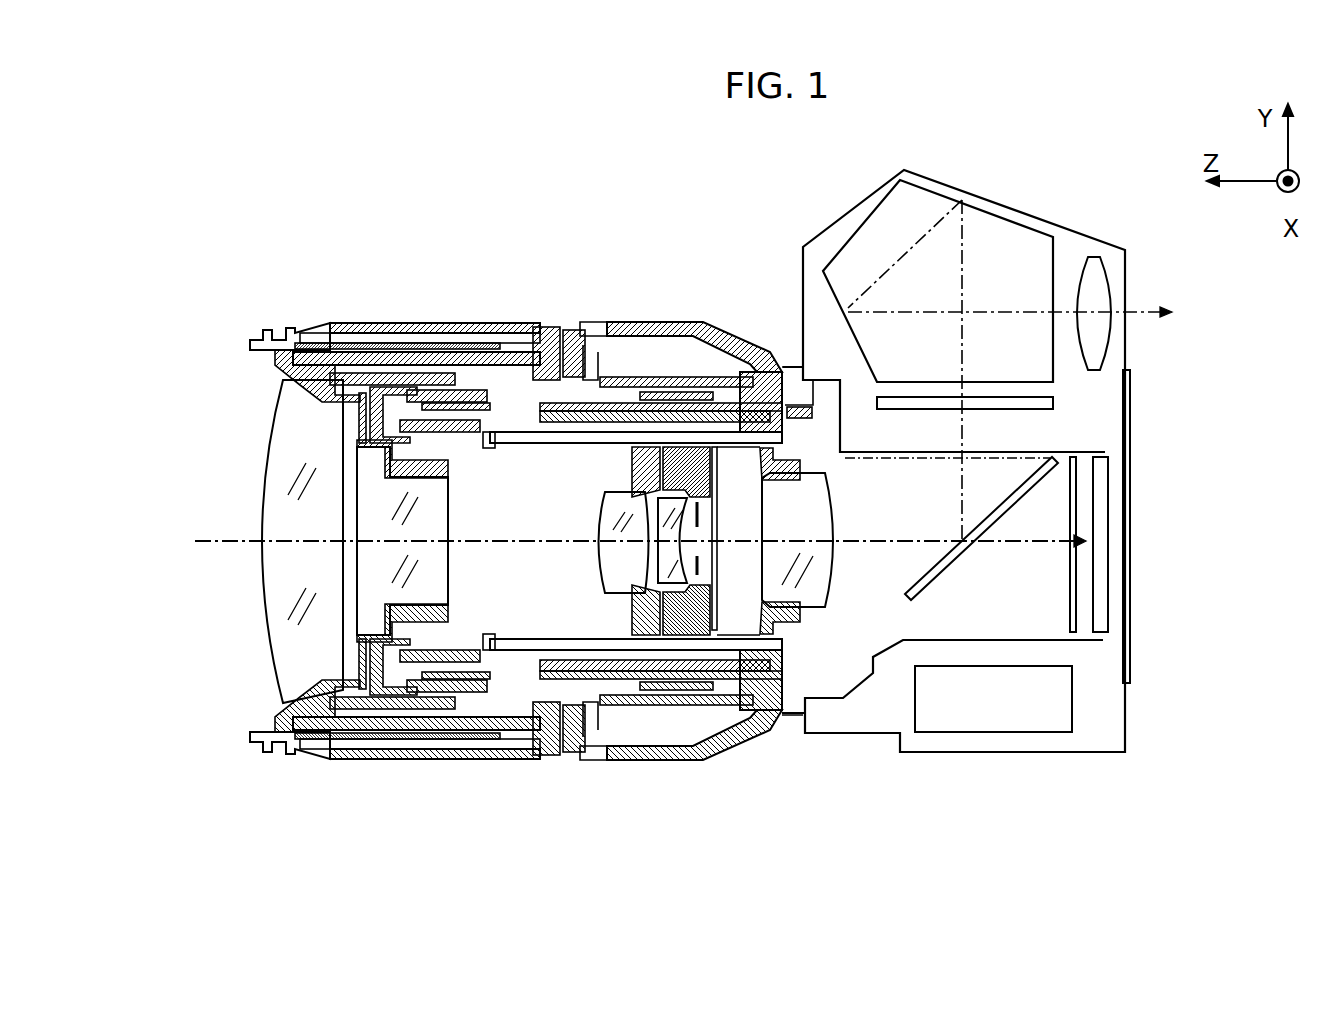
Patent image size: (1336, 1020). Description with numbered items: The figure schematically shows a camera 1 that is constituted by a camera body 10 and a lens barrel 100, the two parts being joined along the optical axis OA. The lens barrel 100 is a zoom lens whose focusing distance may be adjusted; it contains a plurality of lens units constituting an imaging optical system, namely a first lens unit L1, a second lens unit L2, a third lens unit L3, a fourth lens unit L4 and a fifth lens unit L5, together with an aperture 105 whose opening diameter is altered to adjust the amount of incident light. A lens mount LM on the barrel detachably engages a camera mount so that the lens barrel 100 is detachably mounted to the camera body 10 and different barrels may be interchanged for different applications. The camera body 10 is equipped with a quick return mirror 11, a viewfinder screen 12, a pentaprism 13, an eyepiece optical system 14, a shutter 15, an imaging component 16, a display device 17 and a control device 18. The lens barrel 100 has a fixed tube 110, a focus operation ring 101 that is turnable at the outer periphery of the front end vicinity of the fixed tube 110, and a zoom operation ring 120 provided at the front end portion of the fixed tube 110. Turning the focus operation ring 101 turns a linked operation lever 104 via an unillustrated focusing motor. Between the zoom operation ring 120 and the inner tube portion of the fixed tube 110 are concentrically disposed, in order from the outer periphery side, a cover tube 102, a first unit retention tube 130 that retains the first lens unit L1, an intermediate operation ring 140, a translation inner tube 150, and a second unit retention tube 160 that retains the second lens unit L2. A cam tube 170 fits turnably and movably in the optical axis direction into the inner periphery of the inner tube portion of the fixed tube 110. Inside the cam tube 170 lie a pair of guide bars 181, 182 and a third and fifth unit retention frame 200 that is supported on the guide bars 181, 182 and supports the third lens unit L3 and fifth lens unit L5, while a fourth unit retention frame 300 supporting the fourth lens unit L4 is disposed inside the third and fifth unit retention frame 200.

The camera 1 is at (616, 186).
The camera body 10 is at (790, 229).
The quick return mirror 11 is at (948, 547).
The viewfinder screen 12 is at (1057, 403).
The pentaprism 13 is at (1016, 232).
The eyepiece optical system 14 is at (1108, 297).
The shutter 15 is at (1078, 480).
The imaging component 16 is at (1110, 528).
The display device 17 is at (1131, 566).
The control device 18 is at (1008, 734).
The lens barrel 100 is at (503, 294).
The focus operation ring 101 is at (588, 330).
The cover tube 102 is at (400, 350).
The linked operation lever 104 is at (545, 345).
The aperture 105 is at (722, 523).
The fixed tube 110 is at (657, 326).
The zoom operation ring 120 is at (443, 325).
The first unit retention tube 130 is at (306, 330).
The intermediate operation ring 140 is at (353, 333).
The translation inner tube 150 is at (330, 380).
The second unit retention tube 160 is at (360, 432).
The cam tube 170 is at (752, 372).
The guide bar 181 is at (562, 446).
The guide bar 182 is at (518, 639).
The third and fifth unit retention frame 200 is at (795, 628).
The fourth unit retention frame 300 is at (715, 545).
The first lens unit L1 is at (263, 594).
The second lens unit L2 is at (448, 520).
The third lens unit L3 is at (606, 555).
The fourth lens unit L4 is at (663, 558).
The fifth lens unit L5 is at (815, 568).
The lens mount LM is at (810, 403).
The optical axis OA is at (217, 543).